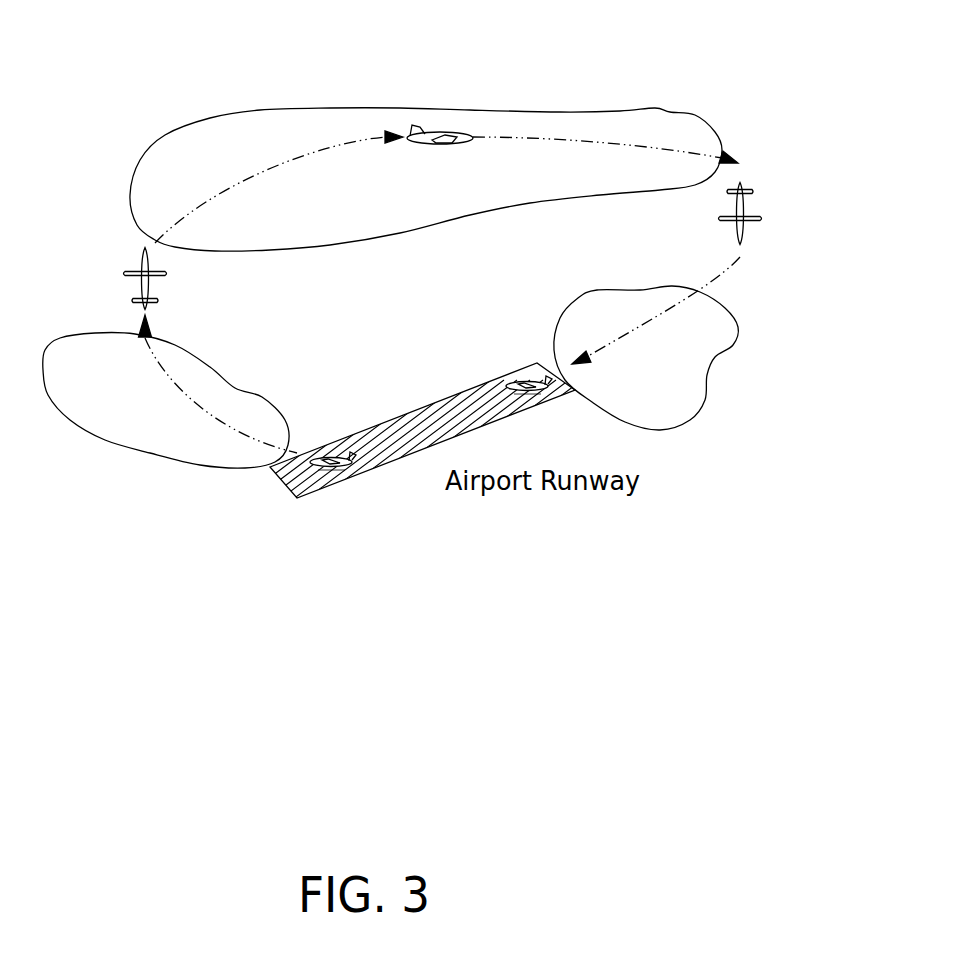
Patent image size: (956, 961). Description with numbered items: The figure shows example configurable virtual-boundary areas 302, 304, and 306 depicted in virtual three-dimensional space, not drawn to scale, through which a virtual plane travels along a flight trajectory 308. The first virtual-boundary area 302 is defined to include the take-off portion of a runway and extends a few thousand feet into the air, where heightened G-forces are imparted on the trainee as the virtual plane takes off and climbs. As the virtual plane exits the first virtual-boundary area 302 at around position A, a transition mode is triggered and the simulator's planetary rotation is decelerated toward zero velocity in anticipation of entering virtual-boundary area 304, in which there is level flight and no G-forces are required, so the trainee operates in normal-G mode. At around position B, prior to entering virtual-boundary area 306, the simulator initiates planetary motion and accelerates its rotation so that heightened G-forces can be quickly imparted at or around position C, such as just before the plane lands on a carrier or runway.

The first virtual-boundary area 302 is at (270, 400).
The virtual-boundary area 304 is at (290, 108).
The virtual-boundary area 306 is at (717, 350).
The flight trajectory 308 is at (583, 142).
The position A is at (130, 272).
The position B is at (757, 218).
The position C is at (603, 350).